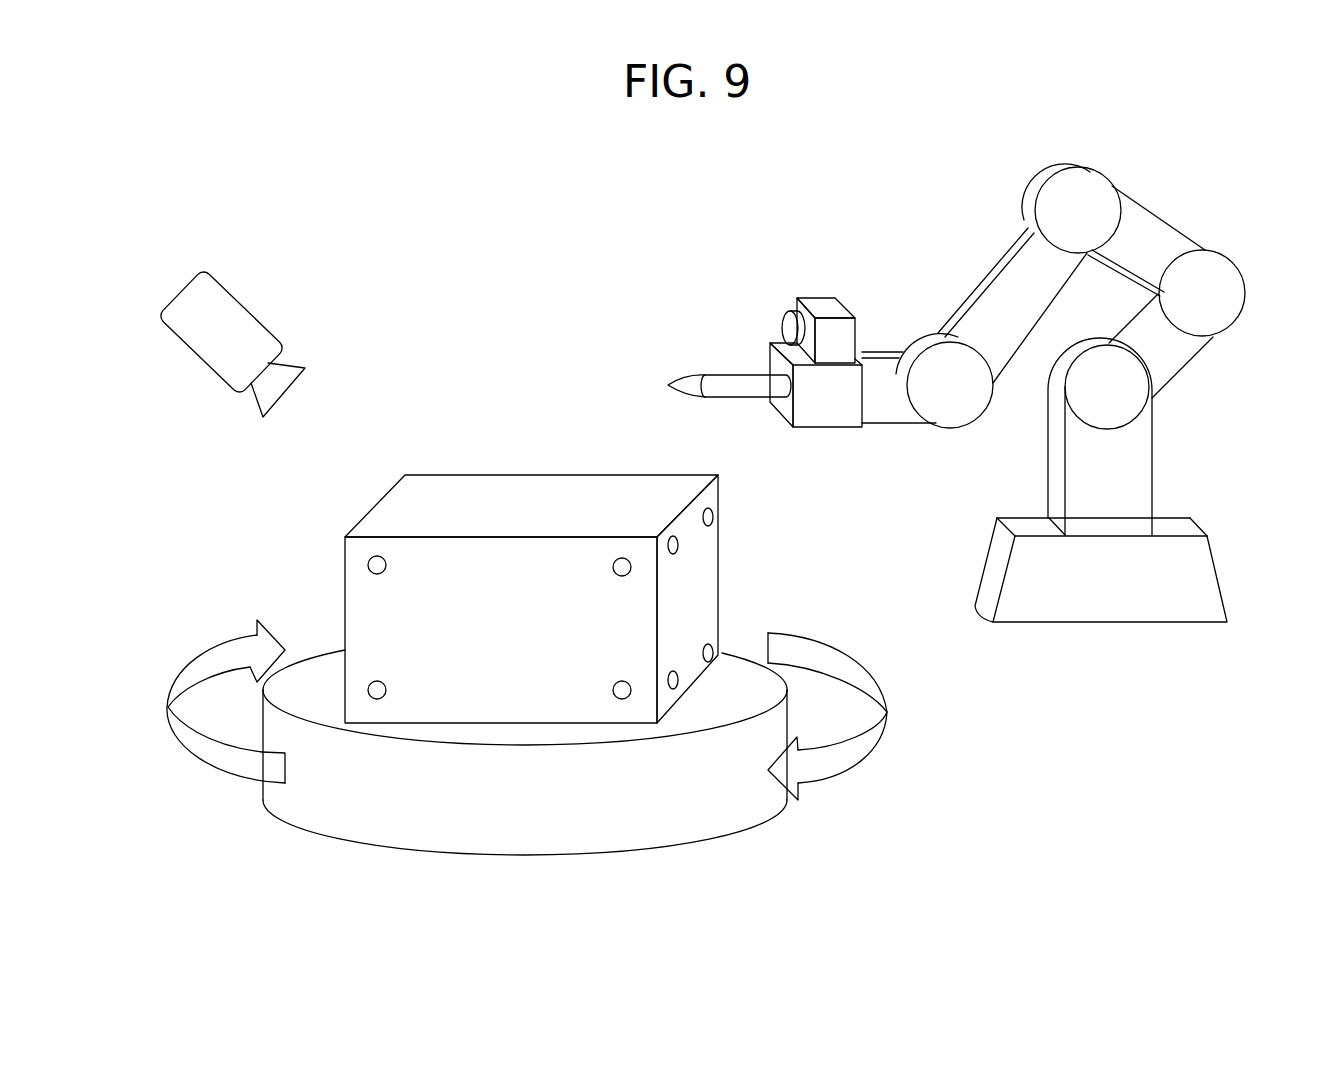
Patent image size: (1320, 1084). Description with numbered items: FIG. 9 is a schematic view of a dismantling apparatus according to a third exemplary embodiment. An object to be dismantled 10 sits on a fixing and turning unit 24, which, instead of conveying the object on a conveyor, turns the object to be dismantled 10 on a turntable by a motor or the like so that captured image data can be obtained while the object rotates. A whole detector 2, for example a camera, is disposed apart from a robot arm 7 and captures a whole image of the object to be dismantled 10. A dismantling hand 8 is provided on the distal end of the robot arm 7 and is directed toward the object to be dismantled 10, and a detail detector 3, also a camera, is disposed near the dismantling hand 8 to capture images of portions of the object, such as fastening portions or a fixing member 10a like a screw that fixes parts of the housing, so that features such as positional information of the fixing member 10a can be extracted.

The whole detector 2 is at (260, 322).
The detail detector 3 is at (823, 298).
The robot arm 7 is at (1110, 185).
The dismantling hand 8 is at (733, 384).
The object to be dismantled 10 is at (531, 670).
The fixing member 10a is at (629, 573).
The fixing and turning unit 24 is at (733, 672).